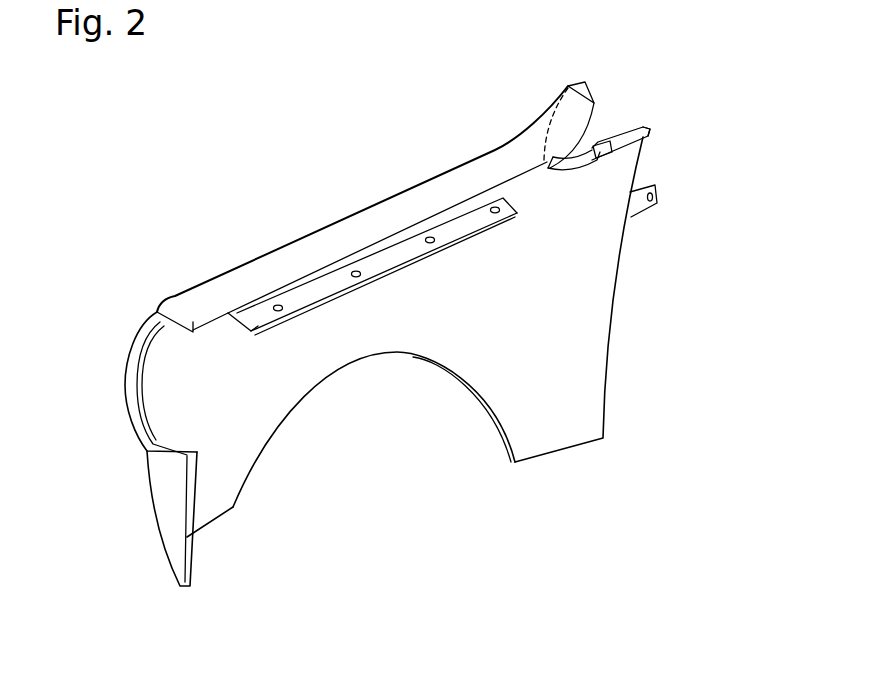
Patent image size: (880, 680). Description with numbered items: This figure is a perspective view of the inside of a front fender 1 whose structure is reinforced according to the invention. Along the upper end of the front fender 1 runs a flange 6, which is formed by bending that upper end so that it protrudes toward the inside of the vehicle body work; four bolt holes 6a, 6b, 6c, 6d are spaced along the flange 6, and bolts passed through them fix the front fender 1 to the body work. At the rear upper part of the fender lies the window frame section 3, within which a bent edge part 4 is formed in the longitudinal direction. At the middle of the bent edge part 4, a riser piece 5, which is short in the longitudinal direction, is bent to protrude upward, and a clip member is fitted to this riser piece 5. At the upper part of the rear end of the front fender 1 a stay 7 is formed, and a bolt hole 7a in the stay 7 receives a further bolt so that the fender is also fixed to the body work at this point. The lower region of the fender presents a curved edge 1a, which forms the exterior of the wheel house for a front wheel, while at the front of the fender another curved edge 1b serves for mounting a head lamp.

The front fender 1 is at (642, 370).
The curved edge 1a is at (460, 383).
The curved edge 1b is at (158, 415).
The window frame section 3 is at (617, 137).
The bent edge part 4 is at (649, 130).
The riser piece 5 is at (592, 160).
The flange 6 is at (265, 331).
The bolt hole 6a is at (278, 305).
The bolt hole 6b is at (356, 271).
The bolt hole 6c is at (430, 237).
The bolt hole 6d is at (495, 207).
The stay 7 is at (635, 193).
The bolt hole 7a is at (654, 197).